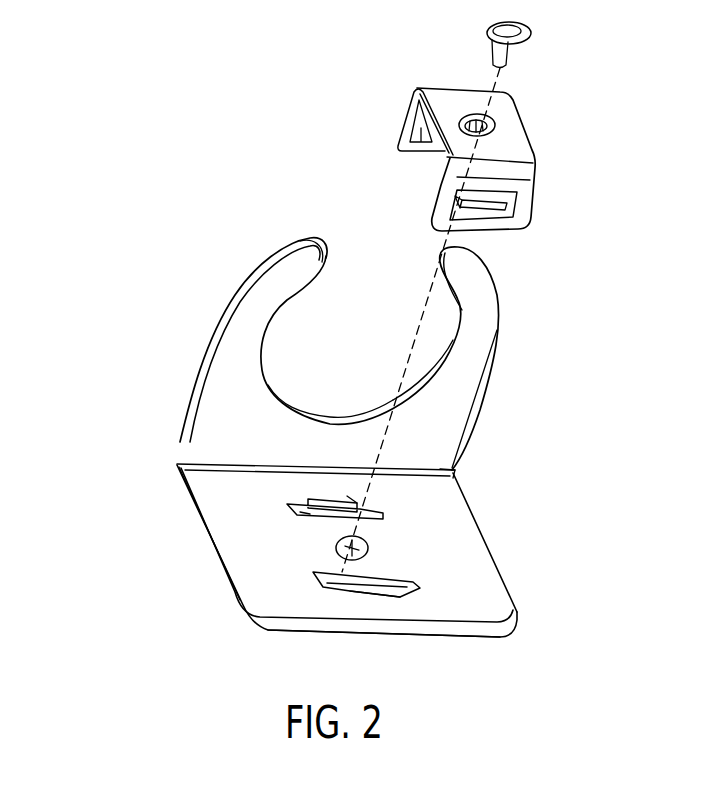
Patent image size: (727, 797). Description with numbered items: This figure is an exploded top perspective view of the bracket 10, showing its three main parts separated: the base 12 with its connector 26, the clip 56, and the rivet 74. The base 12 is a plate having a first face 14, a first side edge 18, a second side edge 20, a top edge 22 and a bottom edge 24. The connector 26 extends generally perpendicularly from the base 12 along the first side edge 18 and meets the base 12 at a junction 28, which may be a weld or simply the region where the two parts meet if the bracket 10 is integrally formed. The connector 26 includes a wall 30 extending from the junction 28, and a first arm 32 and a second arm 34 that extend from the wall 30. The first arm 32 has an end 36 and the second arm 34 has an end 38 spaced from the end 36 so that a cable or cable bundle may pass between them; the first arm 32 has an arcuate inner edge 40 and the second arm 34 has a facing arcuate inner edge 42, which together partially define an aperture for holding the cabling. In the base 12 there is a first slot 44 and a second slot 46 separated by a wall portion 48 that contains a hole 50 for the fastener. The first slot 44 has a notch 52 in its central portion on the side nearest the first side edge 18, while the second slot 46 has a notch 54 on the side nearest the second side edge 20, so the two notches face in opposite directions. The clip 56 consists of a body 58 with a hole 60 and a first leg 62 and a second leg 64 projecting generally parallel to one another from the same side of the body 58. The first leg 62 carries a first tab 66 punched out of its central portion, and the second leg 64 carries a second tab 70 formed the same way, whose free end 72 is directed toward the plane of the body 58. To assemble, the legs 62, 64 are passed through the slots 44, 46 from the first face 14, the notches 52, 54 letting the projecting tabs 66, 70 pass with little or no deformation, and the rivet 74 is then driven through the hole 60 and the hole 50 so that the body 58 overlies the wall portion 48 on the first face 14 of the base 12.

The bracket 10 is at (138, 526).
The base 12 is at (490, 607).
The first face 14 is at (463, 558).
The first side edge 18 is at (460, 468).
The second side edge 20 is at (453, 630).
The top edge 22 is at (505, 572).
The bottom edge 24 is at (227, 580).
The connector 26 is at (506, 380).
The junction 28 is at (187, 463).
The wall 30 is at (218, 420).
The first arm 32 is at (245, 323).
The second arm 34 is at (483, 337).
The end 36 is at (300, 267).
The end 38 is at (468, 268).
The arcuate inner edge 40 is at (273, 330).
The arcuate inner edge 42 is at (440, 357).
The first slot 44 is at (355, 525).
The second slot 46 is at (313, 572).
The wall portion 48 is at (317, 527).
The hole 50 is at (337, 541).
The notch 52 is at (347, 500).
The notch 54 is at (373, 598).
The clip 56 is at (522, 128).
The body 58 is at (520, 150).
The hole 60 is at (492, 125).
The first leg 62 is at (407, 105).
The second leg 64 is at (533, 188).
The first tab 66 is at (423, 132).
The second tab 70 is at (492, 218).
The free end 72 is at (503, 208).
The rivet 74 is at (533, 36).